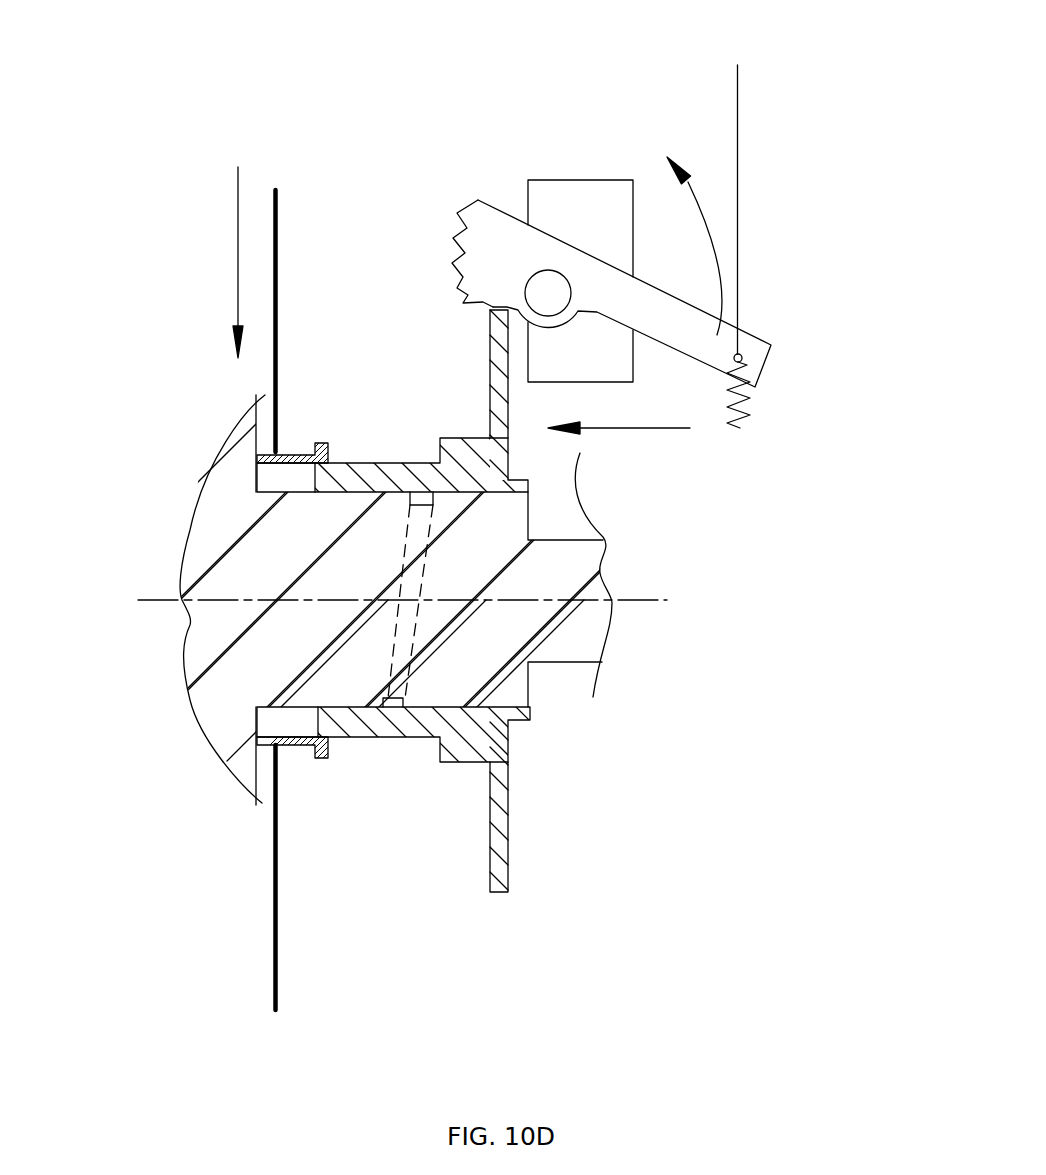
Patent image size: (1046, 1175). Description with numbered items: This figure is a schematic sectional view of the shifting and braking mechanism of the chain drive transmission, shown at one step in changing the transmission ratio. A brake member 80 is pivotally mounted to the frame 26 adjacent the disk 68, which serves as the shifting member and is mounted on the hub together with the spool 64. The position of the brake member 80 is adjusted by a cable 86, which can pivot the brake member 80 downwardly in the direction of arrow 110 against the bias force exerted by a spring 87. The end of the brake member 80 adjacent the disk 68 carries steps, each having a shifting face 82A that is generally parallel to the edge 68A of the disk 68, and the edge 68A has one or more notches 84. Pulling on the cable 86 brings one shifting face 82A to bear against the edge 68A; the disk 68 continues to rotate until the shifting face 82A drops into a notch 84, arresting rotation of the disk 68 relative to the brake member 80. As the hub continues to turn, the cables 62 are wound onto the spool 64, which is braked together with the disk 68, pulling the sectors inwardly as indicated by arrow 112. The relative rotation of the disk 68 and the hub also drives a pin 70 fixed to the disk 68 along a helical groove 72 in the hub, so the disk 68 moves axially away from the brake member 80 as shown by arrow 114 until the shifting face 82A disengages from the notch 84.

The frame 26 is at (586, 207).
The cable 62 is at (275, 188).
The spool 64 is at (302, 455).
The disk 68 is at (492, 387).
The edge of disk 68A is at (510, 888).
The pin 70 is at (420, 493).
The helical groove 72 is at (388, 657).
The brake member 80 is at (635, 305).
The shifting face 82A is at (457, 215).
The notch 84 is at (490, 308).
The cable 86 is at (727, 63).
The spring 87 is at (752, 400).
The arrow 110 is at (715, 238).
The arrow 112 is at (238, 245).
The arrow 114 is at (637, 430).